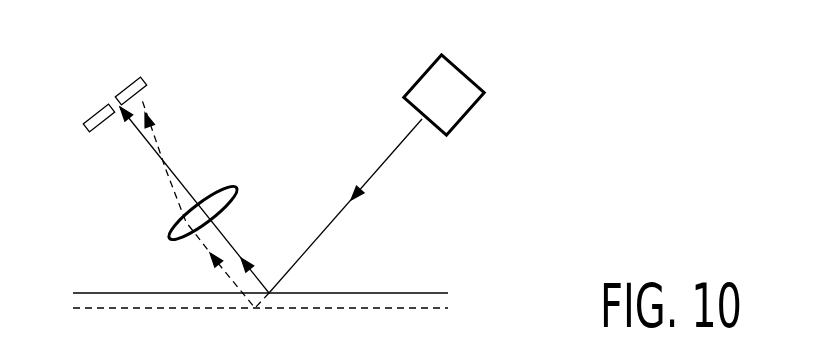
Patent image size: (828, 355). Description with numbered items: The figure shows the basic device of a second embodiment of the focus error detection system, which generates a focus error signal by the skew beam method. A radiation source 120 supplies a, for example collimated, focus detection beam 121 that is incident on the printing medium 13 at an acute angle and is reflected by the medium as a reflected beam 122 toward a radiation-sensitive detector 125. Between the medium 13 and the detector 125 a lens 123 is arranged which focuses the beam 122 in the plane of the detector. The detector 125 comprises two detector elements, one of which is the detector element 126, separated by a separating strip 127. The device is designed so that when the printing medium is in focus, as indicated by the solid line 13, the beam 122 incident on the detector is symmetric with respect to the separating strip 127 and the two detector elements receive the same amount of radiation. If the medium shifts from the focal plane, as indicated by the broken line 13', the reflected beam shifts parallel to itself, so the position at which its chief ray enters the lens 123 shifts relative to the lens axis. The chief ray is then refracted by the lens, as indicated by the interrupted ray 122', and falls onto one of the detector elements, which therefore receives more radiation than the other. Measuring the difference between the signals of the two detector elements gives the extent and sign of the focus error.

The radiation-sensitive detector 125 is at (212, 45).
The radiation source 120 is at (455, 102).
The focus detection beam 121 is at (337, 213).
The reflected beam 122 is at (210, 200).
The interrupted ray 122' is at (184, 202).
The lens 123 is at (238, 189).
The detector element 126 is at (94, 130).
The separating strip 127 is at (138, 97).
The printing medium 13 is at (286, 274).
The printing medium shifted from focal plane 13' is at (288, 325).